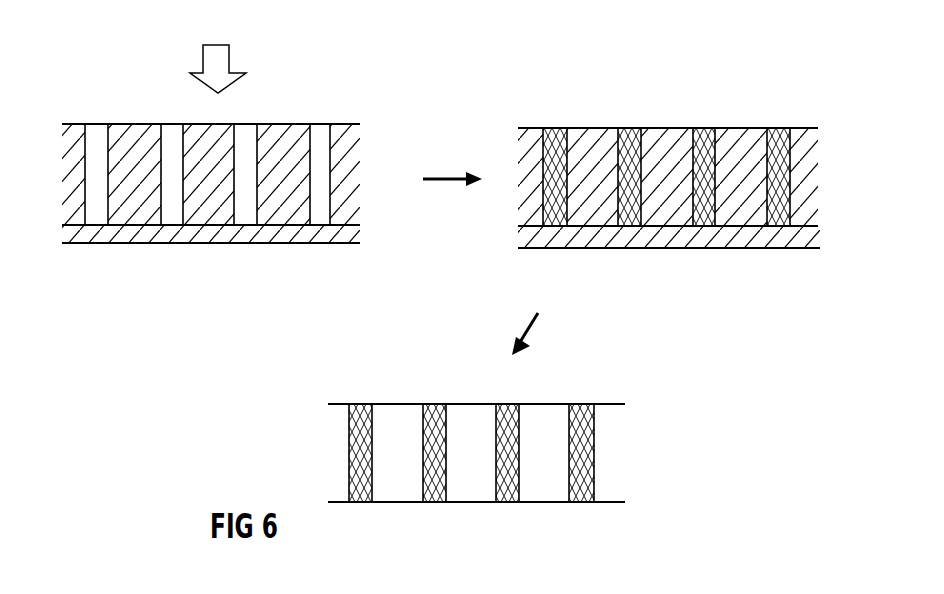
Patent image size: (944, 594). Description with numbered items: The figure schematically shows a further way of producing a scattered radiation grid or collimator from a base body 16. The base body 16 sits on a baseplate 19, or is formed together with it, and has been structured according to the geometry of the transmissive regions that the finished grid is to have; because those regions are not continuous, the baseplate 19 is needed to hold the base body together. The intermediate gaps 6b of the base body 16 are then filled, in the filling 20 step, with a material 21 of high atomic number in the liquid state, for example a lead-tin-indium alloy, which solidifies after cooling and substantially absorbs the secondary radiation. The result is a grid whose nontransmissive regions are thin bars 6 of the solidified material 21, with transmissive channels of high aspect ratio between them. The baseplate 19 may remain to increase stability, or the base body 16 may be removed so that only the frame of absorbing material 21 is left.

The intermediate gaps 6b is at (93, 140).
The filling 20 is at (238, 69).
The base body 16 is at (360, 124).
The baseplate 19 is at (530, 233).
The material of high atomic number 21 is at (700, 223).
The thin bars 6 is at (592, 405).